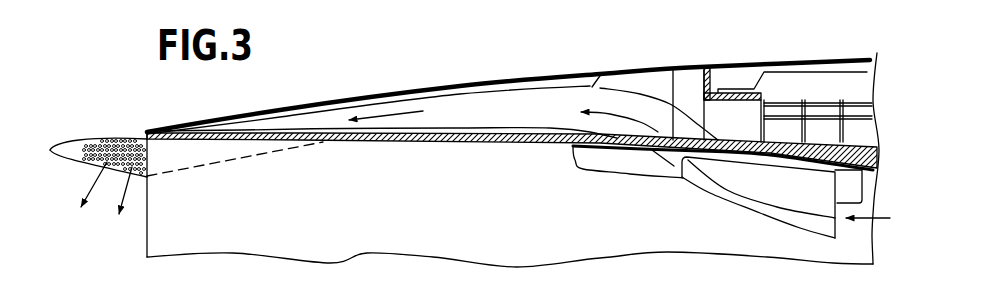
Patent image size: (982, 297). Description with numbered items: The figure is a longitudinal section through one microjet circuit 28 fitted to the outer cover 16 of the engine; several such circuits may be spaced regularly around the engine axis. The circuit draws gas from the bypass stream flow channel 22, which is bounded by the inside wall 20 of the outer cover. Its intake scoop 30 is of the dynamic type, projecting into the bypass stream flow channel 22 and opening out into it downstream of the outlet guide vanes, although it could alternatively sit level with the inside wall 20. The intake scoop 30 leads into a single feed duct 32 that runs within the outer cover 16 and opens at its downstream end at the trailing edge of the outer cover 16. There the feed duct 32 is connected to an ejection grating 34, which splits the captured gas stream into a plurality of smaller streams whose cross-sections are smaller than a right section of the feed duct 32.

The outer cover 16 is at (731, 55).
The inside wall 20 is at (382, 144).
The bypass stream flow channel 22 is at (486, 222).
The microjet circuit 28 is at (613, 72).
The intake scoop 30 is at (748, 210).
The feed duct 32 is at (453, 113).
The ejection grating 34 is at (90, 137).